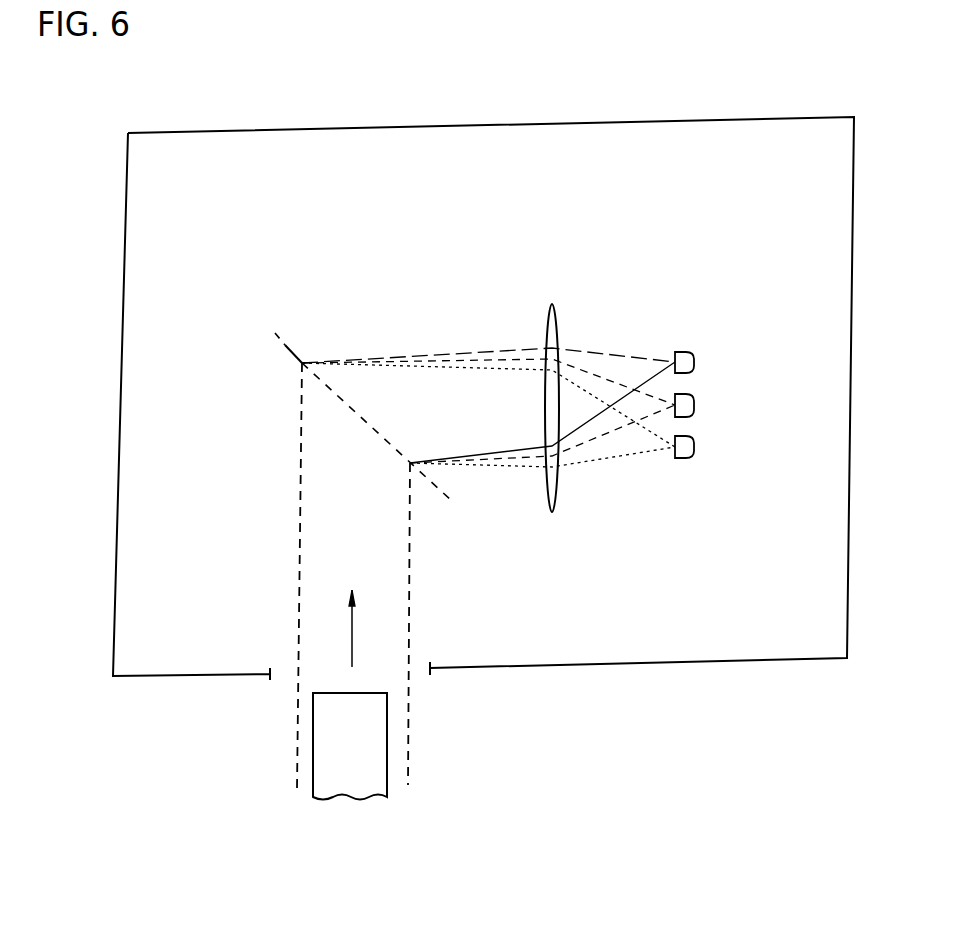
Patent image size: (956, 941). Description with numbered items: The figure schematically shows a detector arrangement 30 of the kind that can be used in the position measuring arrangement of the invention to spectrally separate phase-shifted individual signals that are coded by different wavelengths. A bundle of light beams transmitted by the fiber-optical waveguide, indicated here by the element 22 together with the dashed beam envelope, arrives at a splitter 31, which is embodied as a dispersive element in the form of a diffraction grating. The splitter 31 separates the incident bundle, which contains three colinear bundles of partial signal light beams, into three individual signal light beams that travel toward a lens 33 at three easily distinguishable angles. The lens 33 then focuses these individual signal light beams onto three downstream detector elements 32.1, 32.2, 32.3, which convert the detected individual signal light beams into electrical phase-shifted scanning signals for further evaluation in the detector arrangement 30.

The detector arrangement 30 is at (755, 660).
The splitter 31 is at (285, 345).
The detector element 32.1 is at (694, 360).
The detector element 32.2 is at (694, 405).
The detector element 32.3 is at (694, 447).
The lens 33 is at (558, 482).
The object 22 is at (325, 747).